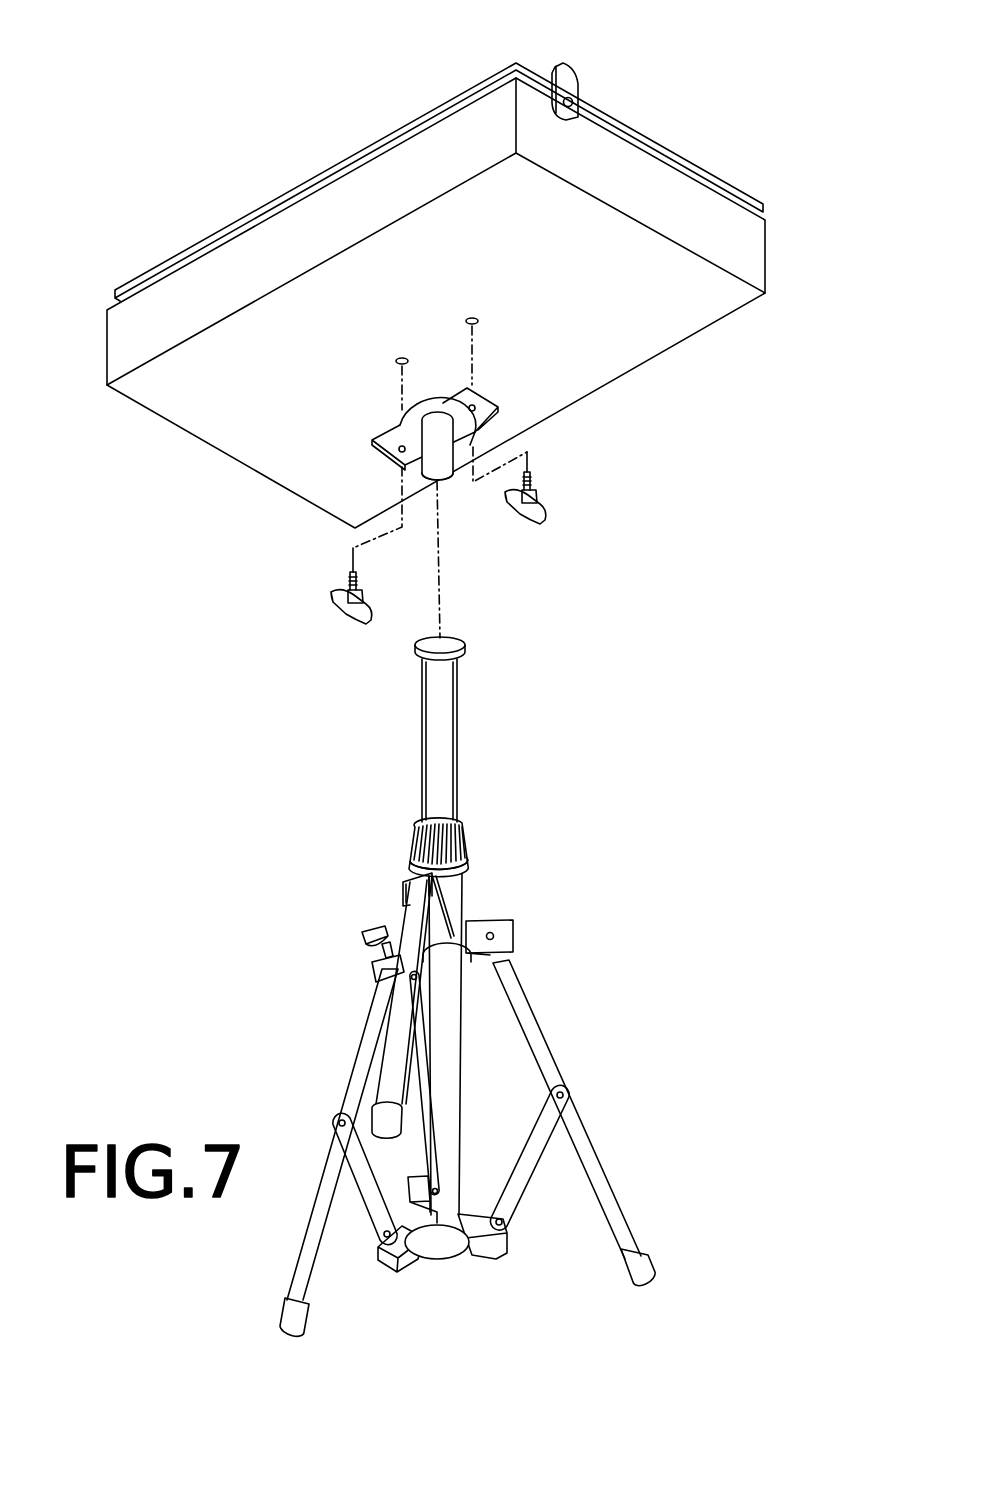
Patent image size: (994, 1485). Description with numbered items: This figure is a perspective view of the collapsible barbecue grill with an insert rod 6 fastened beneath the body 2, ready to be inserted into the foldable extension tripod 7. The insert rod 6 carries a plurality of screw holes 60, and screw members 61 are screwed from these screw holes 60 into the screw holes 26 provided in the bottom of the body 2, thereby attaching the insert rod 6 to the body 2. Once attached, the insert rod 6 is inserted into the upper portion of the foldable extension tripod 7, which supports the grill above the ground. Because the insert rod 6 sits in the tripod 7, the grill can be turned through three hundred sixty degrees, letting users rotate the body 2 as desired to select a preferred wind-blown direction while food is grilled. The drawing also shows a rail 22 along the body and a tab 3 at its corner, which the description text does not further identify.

The body 2 is at (120, 350).
The rail 22 is at (432, 105).
The hanging tab 3 is at (567, 70).
The screw holes 26 is at (478, 322).
The screw holes 60 is at (476, 410).
The insert rod 6 is at (447, 478).
The screw members 61 is at (532, 479).
The foldable extension tripod 7 is at (478, 825).